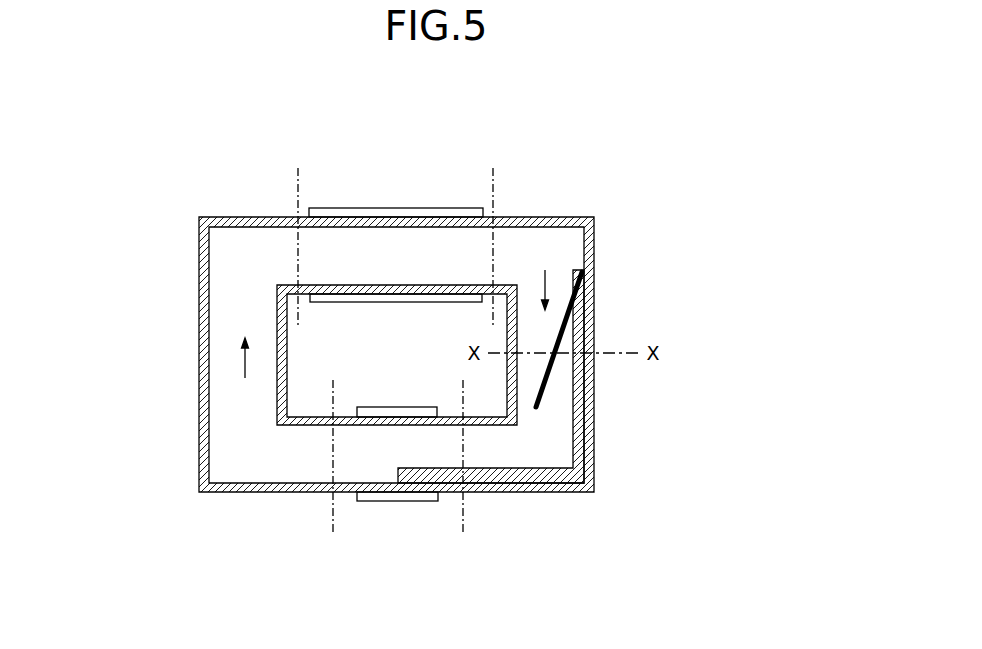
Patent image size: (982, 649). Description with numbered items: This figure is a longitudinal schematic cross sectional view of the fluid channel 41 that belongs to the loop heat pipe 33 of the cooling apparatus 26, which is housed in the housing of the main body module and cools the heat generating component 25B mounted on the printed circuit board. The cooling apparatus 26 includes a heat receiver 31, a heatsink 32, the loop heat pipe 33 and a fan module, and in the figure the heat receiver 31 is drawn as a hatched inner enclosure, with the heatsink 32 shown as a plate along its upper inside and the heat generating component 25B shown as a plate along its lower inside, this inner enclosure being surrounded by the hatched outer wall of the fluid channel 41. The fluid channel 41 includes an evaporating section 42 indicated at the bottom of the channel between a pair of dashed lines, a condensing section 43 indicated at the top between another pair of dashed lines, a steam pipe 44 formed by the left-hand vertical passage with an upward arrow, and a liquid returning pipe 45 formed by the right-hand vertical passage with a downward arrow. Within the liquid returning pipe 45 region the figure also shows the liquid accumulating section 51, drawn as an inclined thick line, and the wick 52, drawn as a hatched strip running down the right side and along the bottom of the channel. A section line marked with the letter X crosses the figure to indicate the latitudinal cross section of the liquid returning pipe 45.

The loop heat pipe 33 is at (240, 186).
The cooling apparatus 26 is at (394, 130).
The condensing section 43 is at (476, 142).
The fluid channel 41 is at (200, 272).
The steam pipe 44 is at (164, 409).
The liquid returning pipe 45 is at (616, 304).
The liquid accumulating section 51 is at (581, 273).
The wick 52 is at (587, 413).
The heat receiver 31 is at (343, 417).
The heatsink 32 is at (428, 302).
The heat generating component 25B is at (402, 407).
The evaporating section 42 is at (336, 585).